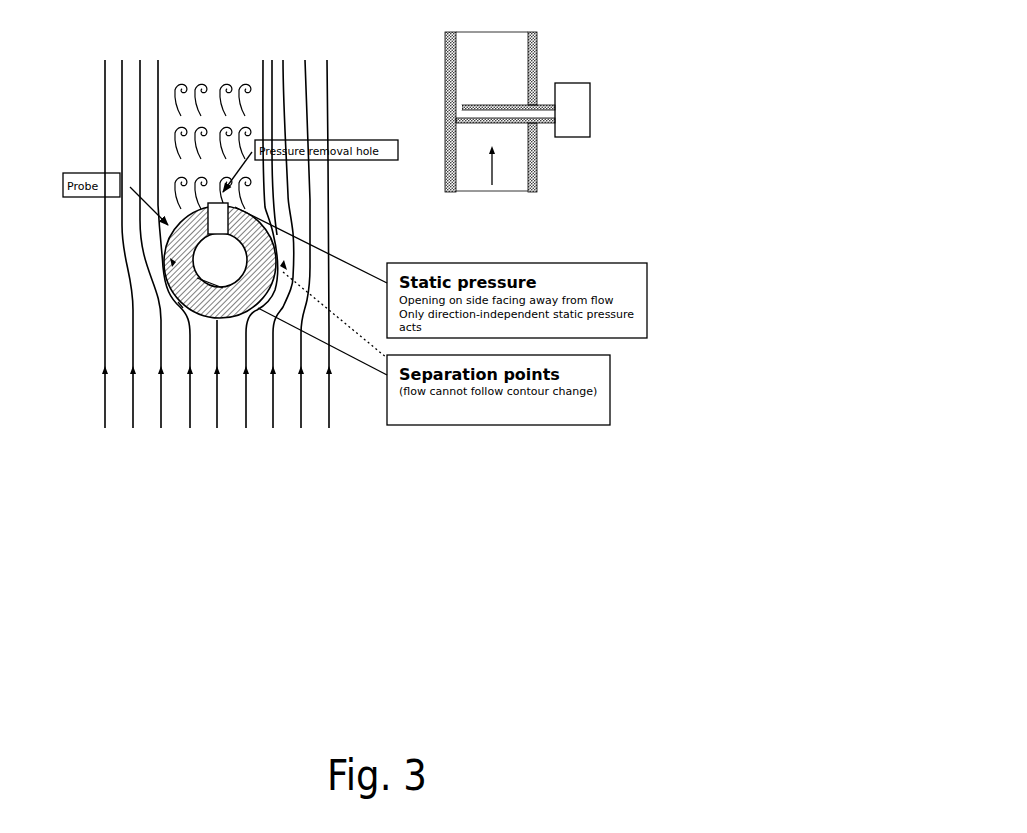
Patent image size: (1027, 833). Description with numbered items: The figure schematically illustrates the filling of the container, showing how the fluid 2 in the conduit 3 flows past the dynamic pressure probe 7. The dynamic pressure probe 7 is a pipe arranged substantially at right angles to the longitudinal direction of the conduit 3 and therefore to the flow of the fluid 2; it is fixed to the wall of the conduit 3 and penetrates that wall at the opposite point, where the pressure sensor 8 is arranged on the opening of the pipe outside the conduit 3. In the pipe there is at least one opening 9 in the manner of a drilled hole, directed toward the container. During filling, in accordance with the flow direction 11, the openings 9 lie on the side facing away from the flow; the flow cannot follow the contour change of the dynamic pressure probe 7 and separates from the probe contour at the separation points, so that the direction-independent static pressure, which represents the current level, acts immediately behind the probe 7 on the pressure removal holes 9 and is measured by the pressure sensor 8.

The fluid 2 is at (295, 118).
The conduit 3 is at (537, 70).
The dynamic pressure probe 7 is at (175, 260).
The pressure sensor 8 is at (578, 115).
The opening 9 is at (222, 216).
The flow direction 11 is at (490, 167).